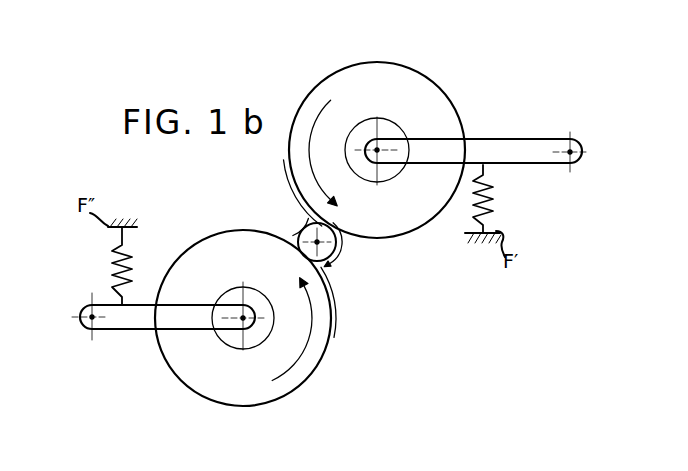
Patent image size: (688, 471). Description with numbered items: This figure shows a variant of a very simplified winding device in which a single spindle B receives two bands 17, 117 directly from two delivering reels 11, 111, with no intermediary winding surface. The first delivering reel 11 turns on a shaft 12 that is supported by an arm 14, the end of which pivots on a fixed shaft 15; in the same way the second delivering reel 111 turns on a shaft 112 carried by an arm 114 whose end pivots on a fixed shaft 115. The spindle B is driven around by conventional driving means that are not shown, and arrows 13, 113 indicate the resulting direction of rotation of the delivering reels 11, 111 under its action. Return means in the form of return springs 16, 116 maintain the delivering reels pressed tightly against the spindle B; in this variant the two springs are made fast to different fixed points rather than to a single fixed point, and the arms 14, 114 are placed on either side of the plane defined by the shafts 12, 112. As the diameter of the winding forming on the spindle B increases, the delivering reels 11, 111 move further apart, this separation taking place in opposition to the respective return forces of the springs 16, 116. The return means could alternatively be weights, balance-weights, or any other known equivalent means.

The delivering reel 11 is at (417, 92).
The shaft 12 is at (378, 149).
The arrow 13 is at (313, 120).
The arm 14 is at (515, 153).
The fixed shaft 15 is at (580, 157).
The return spring 16 is at (493, 205).
The band 17 is at (289, 185).
The spindle B is at (305, 225).
The delivering reel 111 is at (220, 370).
The shaft 112 is at (245, 320).
The arrow 113 is at (305, 350).
The arm 114 is at (137, 323).
The fixed shaft 115 is at (88, 328).
The return spring 116 is at (114, 262).
The band 117 is at (338, 313).